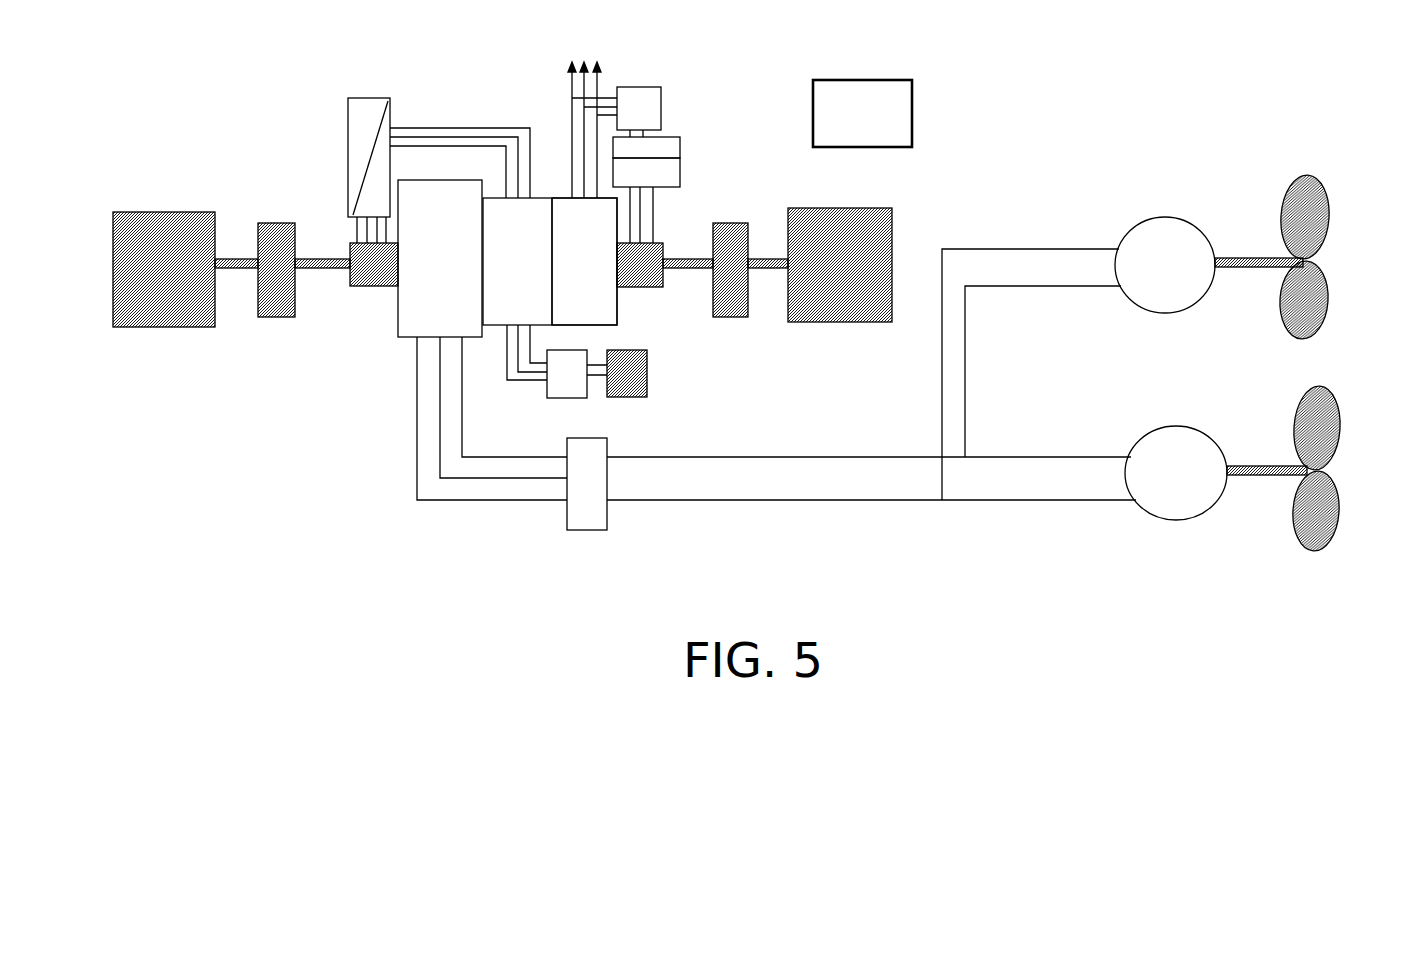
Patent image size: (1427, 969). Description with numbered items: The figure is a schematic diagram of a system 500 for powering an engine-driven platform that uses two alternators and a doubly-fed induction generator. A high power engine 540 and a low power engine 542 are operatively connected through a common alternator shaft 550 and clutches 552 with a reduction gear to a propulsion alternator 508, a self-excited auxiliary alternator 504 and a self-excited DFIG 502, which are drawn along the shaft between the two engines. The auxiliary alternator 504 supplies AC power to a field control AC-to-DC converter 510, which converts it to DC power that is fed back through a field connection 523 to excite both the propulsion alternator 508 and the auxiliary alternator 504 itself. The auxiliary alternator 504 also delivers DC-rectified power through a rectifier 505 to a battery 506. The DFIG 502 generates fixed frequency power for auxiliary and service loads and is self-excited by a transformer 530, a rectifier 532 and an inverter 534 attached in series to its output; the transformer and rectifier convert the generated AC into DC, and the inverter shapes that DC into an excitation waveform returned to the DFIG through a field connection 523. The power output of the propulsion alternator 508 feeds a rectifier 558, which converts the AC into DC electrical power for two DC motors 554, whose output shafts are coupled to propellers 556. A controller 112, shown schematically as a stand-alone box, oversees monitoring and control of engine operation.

The system for powering an engine-driven platform 500 is at (1008, 90).
The controller 112 is at (862, 113).
The self-excited DFIG 502 is at (617, 325).
The self-excited auxiliary alternator 504 is at (543, 197).
The rectifier 505 is at (560, 398).
The battery 506 is at (637, 387).
The propulsion alternator 508 is at (410, 328).
The field control AC-to-DC converter 510 is at (348, 167).
The field connection 523 is at (354, 283).
The transformer 530 is at (638, 87).
The rectifier 532 is at (683, 149).
The inverter 534 is at (683, 179).
The high power engine 540 is at (848, 318).
The low power engine 542 is at (130, 327).
The common alternator shaft 550 is at (316, 257).
The clutches 552 is at (270, 222).
The DC motors 554 is at (1127, 300).
The propellers 556 is at (1323, 322).
The rectifier 558 is at (593, 513).